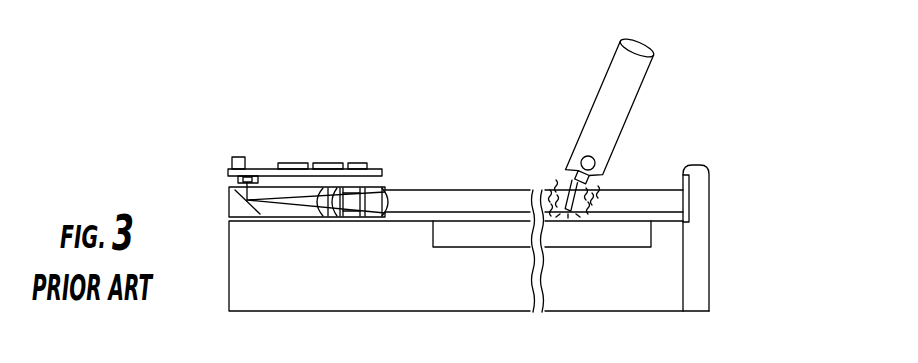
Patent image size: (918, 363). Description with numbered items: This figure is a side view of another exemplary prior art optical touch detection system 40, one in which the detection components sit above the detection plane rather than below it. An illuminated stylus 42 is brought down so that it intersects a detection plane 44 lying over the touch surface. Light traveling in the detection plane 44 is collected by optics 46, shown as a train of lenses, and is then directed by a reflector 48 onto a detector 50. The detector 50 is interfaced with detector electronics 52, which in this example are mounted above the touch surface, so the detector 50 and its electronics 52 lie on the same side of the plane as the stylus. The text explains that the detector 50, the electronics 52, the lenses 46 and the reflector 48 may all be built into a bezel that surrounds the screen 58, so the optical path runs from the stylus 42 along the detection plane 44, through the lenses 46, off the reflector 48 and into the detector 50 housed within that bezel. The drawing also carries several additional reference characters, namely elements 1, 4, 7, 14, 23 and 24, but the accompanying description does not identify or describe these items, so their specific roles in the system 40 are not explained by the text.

The touch detection system 40 is at (745, 133).
The housing base 1 is at (407, 222).
The end wall 4 is at (693, 165).
The exit aperture 14 is at (690, 212).
The circuit board 7 is at (375, 169).
The detector 50 is at (238, 179).
The detector electronics 52 is at (370, 152).
The reflector 48 is at (250, 212).
The optics 46 is at (388, 252).
The detection plane 44 is at (416, 190).
The screen 58 is at (575, 238).
The illuminated stylus 42 is at (592, 100).
The ball joint 24 is at (592, 147).
The tool tip 23 is at (575, 175).